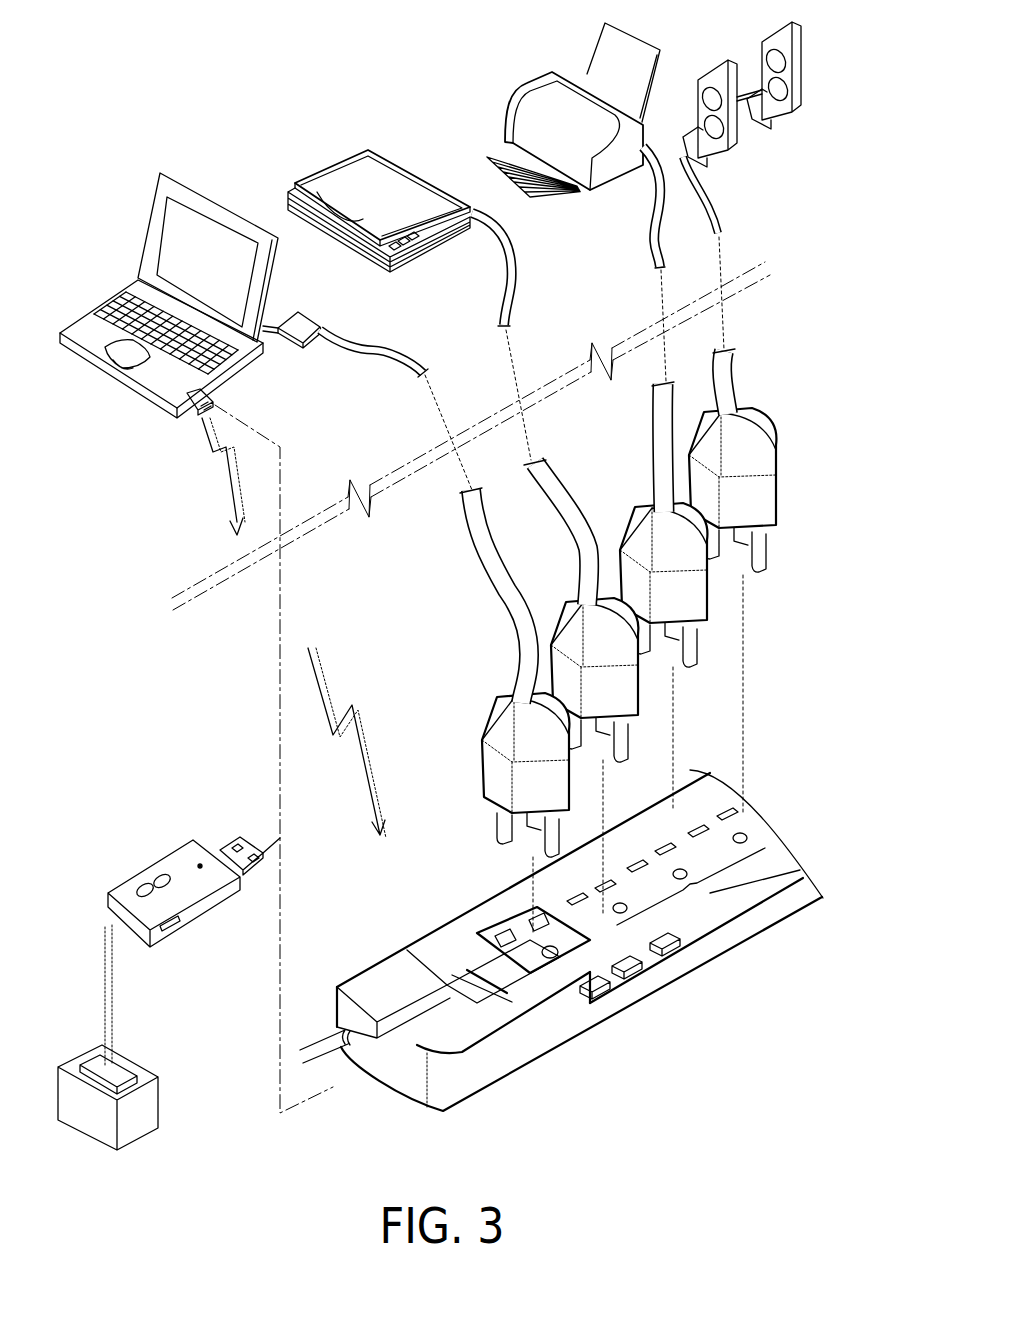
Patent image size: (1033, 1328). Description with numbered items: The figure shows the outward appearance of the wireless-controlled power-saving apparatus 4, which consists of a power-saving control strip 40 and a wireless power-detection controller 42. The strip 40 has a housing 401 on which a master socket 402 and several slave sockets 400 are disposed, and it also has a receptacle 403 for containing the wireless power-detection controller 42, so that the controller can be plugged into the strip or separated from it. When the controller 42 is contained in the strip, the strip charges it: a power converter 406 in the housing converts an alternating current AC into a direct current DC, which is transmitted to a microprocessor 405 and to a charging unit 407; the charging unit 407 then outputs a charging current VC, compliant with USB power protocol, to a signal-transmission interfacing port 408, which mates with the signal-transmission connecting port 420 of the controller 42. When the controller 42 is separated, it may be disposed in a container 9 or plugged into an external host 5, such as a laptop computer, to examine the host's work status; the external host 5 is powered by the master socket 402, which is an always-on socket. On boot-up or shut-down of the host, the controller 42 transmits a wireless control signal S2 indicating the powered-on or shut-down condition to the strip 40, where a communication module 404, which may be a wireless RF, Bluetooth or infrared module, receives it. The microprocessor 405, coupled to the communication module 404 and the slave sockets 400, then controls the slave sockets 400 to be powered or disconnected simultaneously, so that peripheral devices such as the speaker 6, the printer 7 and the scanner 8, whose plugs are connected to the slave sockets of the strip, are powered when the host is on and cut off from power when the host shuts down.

The wireless-controlled power-saving apparatus 4 is at (554, 973).
The power-saving control strip 40 is at (397, 1092).
The wireless power-detection controller 42 is at (219, 746).
The signal-transmission connecting port 420 is at (220, 845).
The slave sockets 400 is at (685, 887).
The housing 401 is at (362, 983).
The master socket 402 is at (553, 970).
The receptacle 403 is at (418, 1013).
The communication module 404 is at (687, 948).
The microprocessor 405 is at (640, 973).
The power converter 406 is at (610, 980).
The charging unit 407 is at (575, 1000).
The signal-transmission interfacing port 408 is at (507, 993).
The external host 5 is at (280, 263).
The speaker 6 is at (785, 122).
The printer 7 is at (513, 100).
The scanner 8 is at (425, 172).
The container 9 is at (143, 1108).
The alternating current AC is at (318, 1045).
The direct current DC is at (578, 975).
The charging current VC is at (495, 917).
The wireless control signal S2 is at (357, 717).